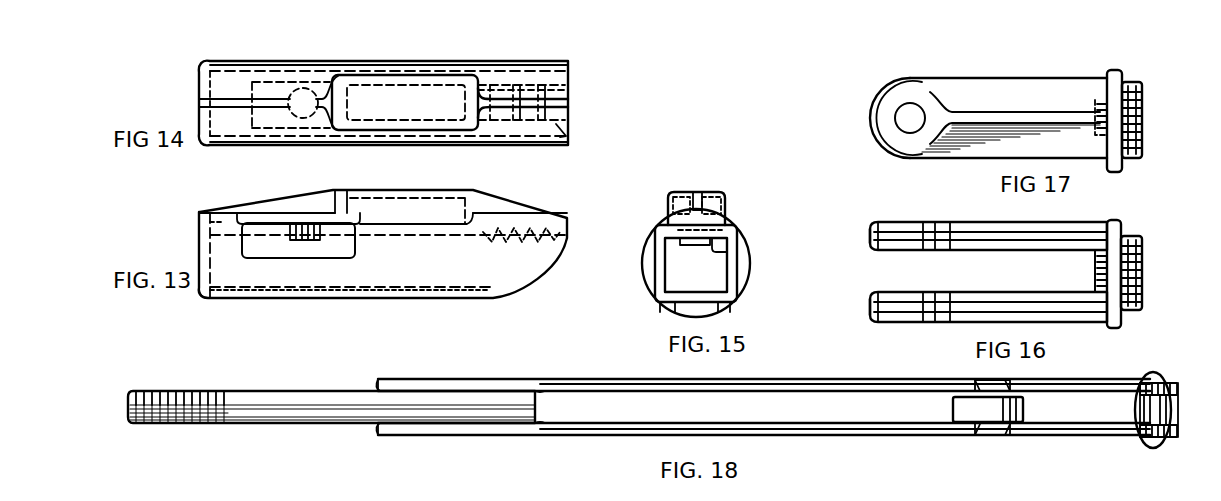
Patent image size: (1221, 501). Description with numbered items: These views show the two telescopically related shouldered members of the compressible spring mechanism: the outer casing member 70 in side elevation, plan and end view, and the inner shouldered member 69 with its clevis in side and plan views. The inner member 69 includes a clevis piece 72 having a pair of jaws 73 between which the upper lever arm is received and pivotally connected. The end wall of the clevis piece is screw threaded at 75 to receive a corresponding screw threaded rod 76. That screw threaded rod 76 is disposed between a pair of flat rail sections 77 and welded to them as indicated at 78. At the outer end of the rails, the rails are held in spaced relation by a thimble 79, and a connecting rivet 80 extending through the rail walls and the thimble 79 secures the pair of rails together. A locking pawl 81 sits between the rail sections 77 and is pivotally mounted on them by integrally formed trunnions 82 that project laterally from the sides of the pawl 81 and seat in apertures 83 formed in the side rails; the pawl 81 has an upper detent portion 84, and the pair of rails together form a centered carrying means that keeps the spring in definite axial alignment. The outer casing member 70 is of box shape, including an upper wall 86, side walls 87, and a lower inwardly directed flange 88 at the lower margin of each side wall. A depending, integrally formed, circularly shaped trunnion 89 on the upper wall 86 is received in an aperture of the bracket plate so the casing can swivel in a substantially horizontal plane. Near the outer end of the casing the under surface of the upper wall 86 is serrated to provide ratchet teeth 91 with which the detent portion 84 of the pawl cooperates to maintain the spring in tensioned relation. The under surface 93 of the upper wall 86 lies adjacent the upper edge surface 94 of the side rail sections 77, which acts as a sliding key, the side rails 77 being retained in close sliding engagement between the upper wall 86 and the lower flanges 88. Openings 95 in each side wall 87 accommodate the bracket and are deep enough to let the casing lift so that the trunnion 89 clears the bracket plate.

In FIG. 17, the inner shouldered member 69 is at (1112, 70).
In FIG. 16, the inner shouldered member 69 is at (1114, 220).
In FIG. 14, the outer casing member 70 is at (200, 146).
In FIG. 13, the outer casing member 70 is at (199, 302).
In FIG. 17, the clevis piece 72 is at (951, 90).
In FIG. 16, the clevis piece 72 is at (963, 236).
In FIG. 16, the jaws 73 is at (872, 298).
In FIG. 17, the screw threaded end wall 75 is at (1098, 88).
In FIG. 16, the screw threaded end wall 75 is at (1100, 240).
In FIG. 18, the screw threaded rod 76 is at (182, 393).
In FIG. 18, the flat rail sections 77 is at (581, 430).
In FIG. 18, the welds 78 is at (540, 425).
In FIG. 18, the thimble 79 is at (1137, 395).
In FIG. 18, the connecting rivet 80 is at (1140, 446).
In FIG. 18, the locking pawl 81 is at (953, 408).
In FIG. 18, the trunnions 82 is at (965, 445).
In FIG. 18, the apertures 83 is at (1015, 500).
In FIG. 18, the upper detent portion 84 is at (1010, 486).
In FIG. 13, the upper wall 86 is at (218, 238).
In FIG. 15, the upper wall 86 is at (714, 236).
In FIG. 13, the side walls 87 is at (315, 278).
In FIG. 15, the side walls 87 is at (735, 262).
In FIG. 14, the lower inwardly directed flange 88 is at (570, 140).
In FIG. 13, the lower inwardly directed flange 88 is at (428, 300).
In FIG. 15, the lower inwardly directed flange 88 is at (722, 302).
In FIG. 14, the trunnion 89 is at (307, 88).
In FIG. 13, the trunnion 89 is at (291, 232).
In FIG. 14, the ratchet teeth 91 is at (565, 94).
In FIG. 13, the ratchet teeth 91 is at (545, 226).
In FIG. 15, the ratchet teeth 91 is at (695, 240).
In FIG. 15, the under surface of upper wall 93 is at (728, 251).
In FIG. 18, the upper edge surface 94 is at (778, 492).
In FIG. 13, the openings 95 is at (281, 252).